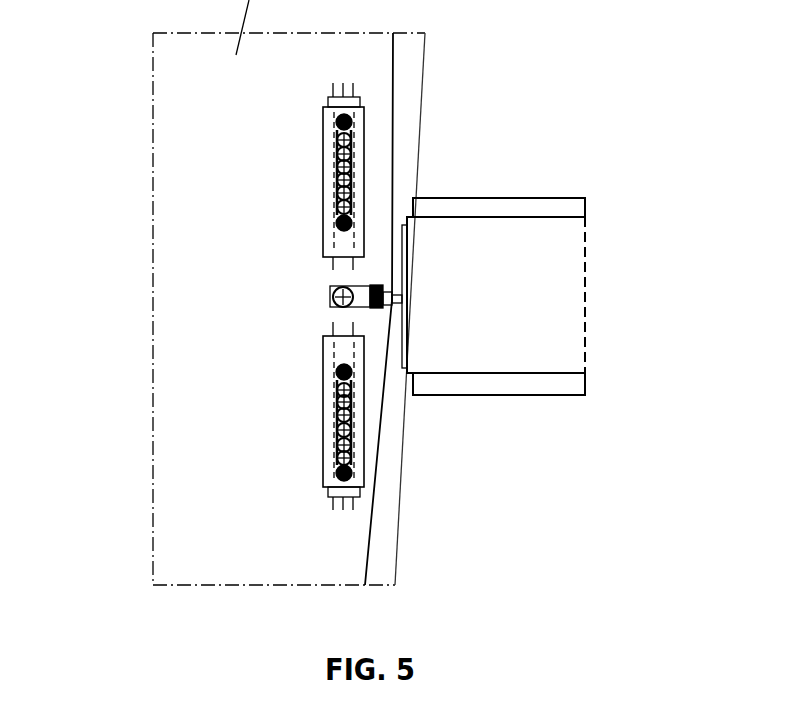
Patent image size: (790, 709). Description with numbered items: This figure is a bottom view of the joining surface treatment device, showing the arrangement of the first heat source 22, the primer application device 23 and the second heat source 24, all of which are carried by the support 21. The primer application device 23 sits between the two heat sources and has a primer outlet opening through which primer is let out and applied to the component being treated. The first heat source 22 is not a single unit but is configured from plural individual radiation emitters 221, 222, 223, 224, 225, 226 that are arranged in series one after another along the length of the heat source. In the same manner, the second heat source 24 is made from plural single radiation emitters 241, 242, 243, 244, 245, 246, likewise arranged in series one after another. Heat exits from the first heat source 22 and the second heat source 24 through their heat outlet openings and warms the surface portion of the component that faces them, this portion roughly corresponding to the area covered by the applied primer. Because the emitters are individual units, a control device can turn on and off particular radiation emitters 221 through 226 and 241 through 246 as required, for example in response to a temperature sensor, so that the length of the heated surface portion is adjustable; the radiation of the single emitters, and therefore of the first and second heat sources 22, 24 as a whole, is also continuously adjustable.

The support 21 is at (556, 278).
The first heat source 22 is at (448, 120).
The primer application device 23 is at (327, 292).
The second heat source 24 is at (446, 479).
The radiation emitter 221 is at (330, 135).
The radiation emitter 222 is at (330, 153).
The radiation emitter 223 is at (330, 165).
The radiation emitter 224 is at (330, 187).
The radiation emitter 225 is at (330, 193).
The radiation emitter 226 is at (330, 207).
The radiation emitter 241 is at (330, 383).
The radiation emitter 242 is at (330, 402).
The radiation emitter 243 is at (330, 413).
The radiation emitter 244 is at (330, 427).
The radiation emitter 245 is at (330, 443).
The radiation emitter 246 is at (330, 450).